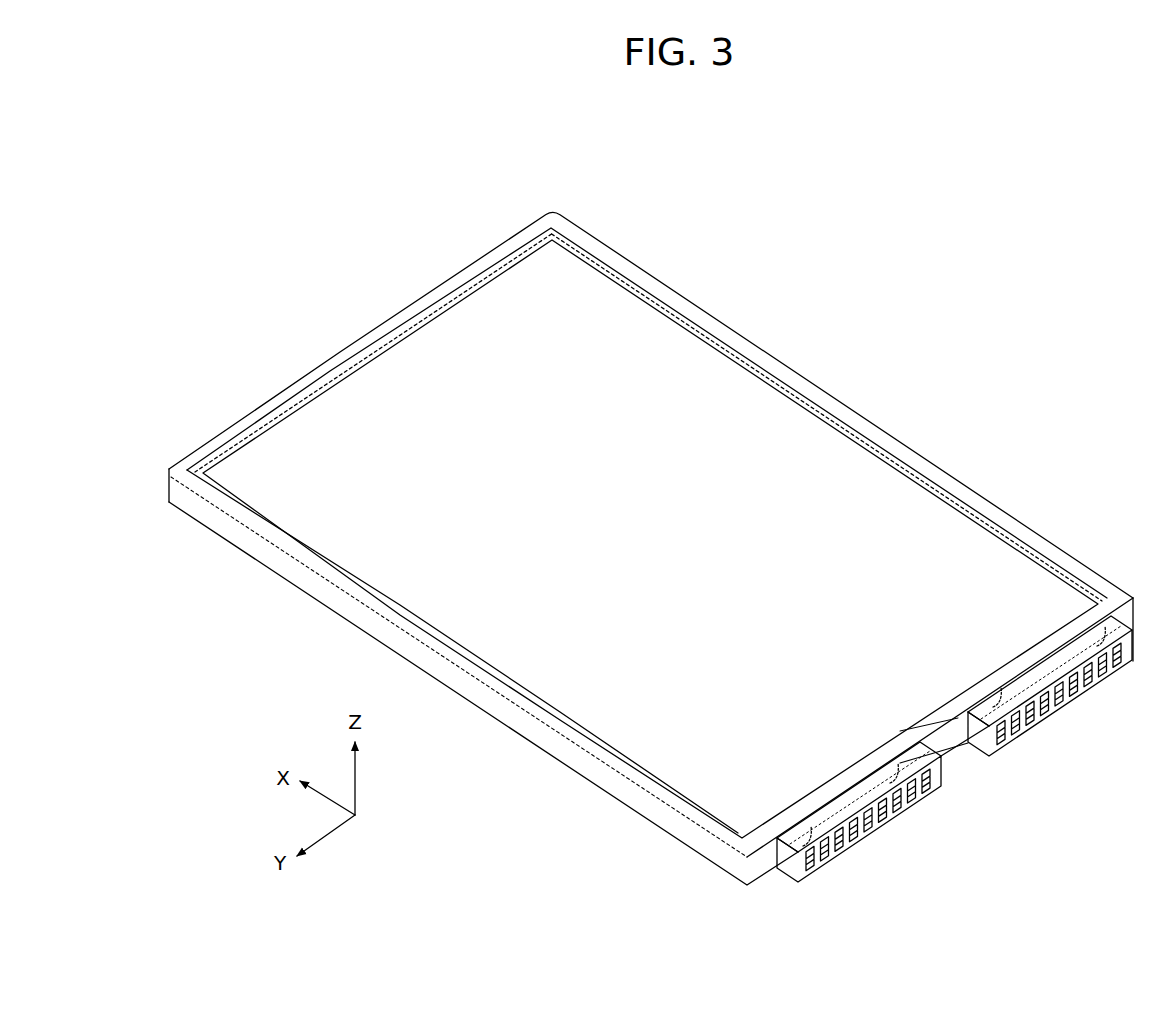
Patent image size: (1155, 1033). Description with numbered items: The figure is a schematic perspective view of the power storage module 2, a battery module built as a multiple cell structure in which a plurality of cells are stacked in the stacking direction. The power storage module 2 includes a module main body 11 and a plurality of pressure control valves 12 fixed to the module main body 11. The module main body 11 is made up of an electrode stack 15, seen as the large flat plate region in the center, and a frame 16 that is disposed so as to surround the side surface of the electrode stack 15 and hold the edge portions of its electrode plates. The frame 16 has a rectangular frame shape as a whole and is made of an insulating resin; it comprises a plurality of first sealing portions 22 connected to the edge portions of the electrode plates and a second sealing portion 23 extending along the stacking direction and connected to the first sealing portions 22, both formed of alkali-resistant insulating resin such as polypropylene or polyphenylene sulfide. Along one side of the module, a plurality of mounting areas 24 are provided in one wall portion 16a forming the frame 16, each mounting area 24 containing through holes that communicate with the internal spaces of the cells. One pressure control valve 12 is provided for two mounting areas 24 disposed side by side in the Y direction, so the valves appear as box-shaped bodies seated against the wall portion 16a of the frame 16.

The power storage module 2 is at (853, 266).
The module main body 11 is at (896, 413).
The pressure control valve 12 is at (1112, 683).
The electrode stack 15 is at (793, 440).
The frame 16 is at (1075, 428).
The wall portion 16a is at (950, 748).
The first sealing portion 22 is at (997, 531).
The second sealing portion 23 is at (1037, 544).
The mounting area 24 is at (1105, 622).